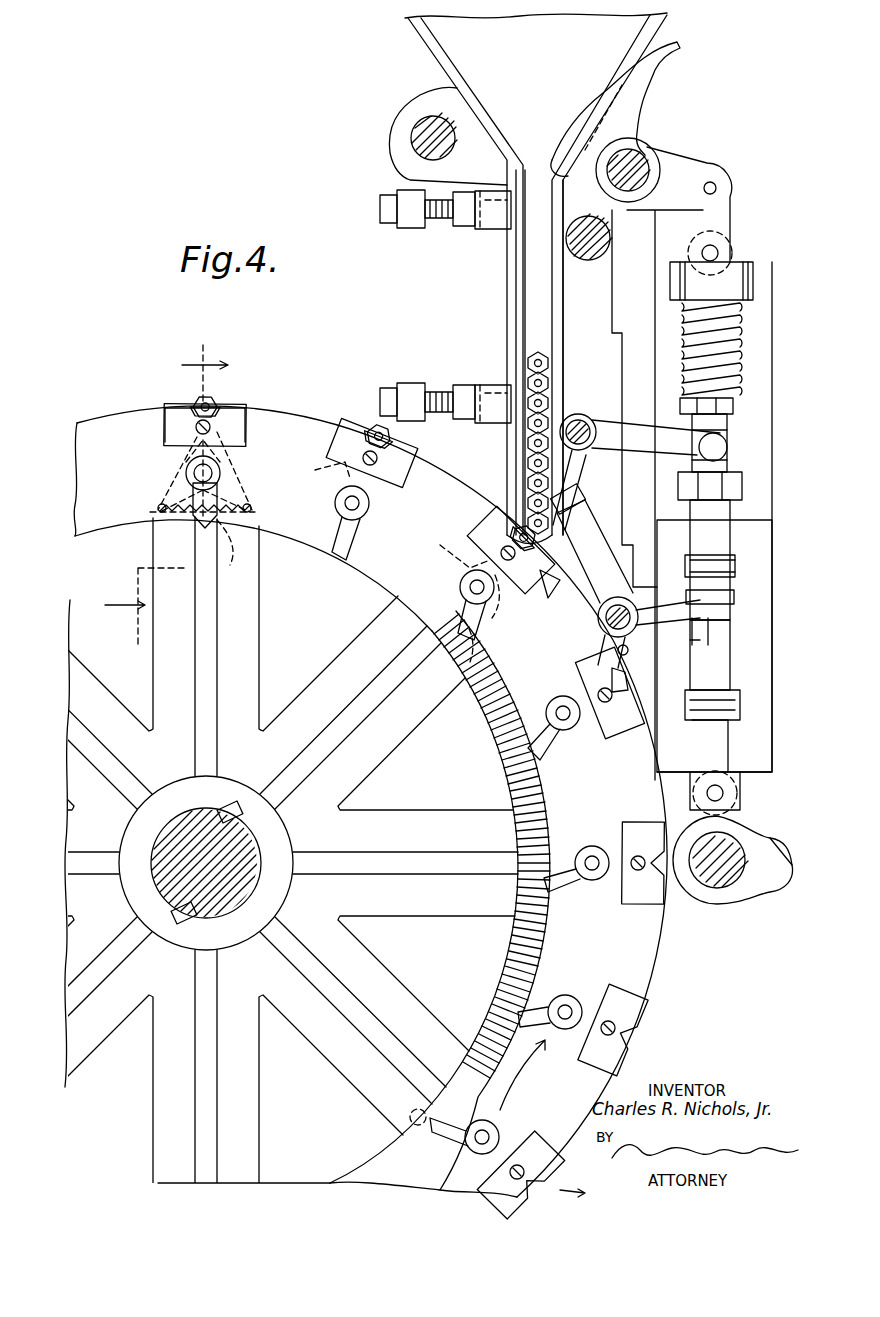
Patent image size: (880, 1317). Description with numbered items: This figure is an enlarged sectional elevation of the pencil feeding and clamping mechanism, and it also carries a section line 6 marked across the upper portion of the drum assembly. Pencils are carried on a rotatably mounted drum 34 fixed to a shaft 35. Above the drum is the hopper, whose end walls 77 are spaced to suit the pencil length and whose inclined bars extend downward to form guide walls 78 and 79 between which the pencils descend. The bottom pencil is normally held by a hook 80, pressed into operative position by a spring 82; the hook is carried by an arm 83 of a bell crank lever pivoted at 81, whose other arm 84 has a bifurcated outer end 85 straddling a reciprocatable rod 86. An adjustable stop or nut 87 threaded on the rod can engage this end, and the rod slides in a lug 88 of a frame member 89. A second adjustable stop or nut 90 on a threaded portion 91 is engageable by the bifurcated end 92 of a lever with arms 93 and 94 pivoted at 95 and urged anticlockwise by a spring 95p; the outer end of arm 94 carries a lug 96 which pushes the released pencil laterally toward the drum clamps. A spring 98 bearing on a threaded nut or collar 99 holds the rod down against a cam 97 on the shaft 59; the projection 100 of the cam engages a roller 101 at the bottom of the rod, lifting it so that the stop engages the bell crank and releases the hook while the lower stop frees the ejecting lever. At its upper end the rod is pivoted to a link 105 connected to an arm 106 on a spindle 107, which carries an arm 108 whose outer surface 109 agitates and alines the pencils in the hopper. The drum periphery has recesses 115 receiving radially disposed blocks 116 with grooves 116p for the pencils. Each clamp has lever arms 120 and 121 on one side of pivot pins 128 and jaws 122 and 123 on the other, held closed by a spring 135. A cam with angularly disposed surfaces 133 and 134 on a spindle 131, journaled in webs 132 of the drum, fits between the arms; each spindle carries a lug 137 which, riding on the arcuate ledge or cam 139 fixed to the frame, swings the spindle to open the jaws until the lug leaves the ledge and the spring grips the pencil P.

The drum 34 is at (68, 436).
The shaft 35 is at (245, 858).
The shaft 59 is at (726, 880).
The end walls 77 is at (460, 30).
The guide wall 78 is at (522, 262).
The guide wall 79 is at (546, 290).
The hook 80 is at (550, 592).
The pivot 81 is at (590, 427).
The spring 82 is at (576, 420).
The arm 83 is at (566, 478).
The arm 84 is at (656, 437).
The bifurcated outer end 85 is at (692, 452).
The reciprocatable rod 86 is at (727, 440).
The adjustable stop or nut 87 is at (730, 470).
The lug 88 is at (748, 270).
The frame member 89 is at (770, 628).
The adjustable stop or nut 90 is at (735, 592).
The threaded portion 91 is at (735, 564).
The bifurcated end 92 is at (694, 646).
The arm 93 is at (652, 606).
The arm 94 is at (602, 550).
The pivot 95 is at (600, 620).
The spring 95p is at (617, 650).
The lug 96 is at (580, 504).
The cam 97 is at (698, 906).
The spring 98 is at (742, 330).
The threaded nut or collar 99 is at (735, 405).
The projection 100 is at (778, 882).
The roller 101 is at (740, 806).
The link 105 is at (726, 232).
The arm 106 is at (705, 178).
The spindle 107 is at (642, 166).
The arm 108 is at (656, 92).
The outer surface 109 is at (613, 97).
The recesses 115 is at (160, 423).
The blocks 116 is at (226, 414).
The grooves 116p is at (345, 465).
The arm 120 is at (160, 510).
The arm 121 is at (250, 496).
The jaw 122 is at (195, 403).
The jaw 123 is at (240, 372).
The pivot pins 128 is at (196, 430).
The spindle 131 is at (518, 862).
The webs 132 is at (78, 483).
The angularly disposed surface 133 is at (186, 473).
The angularly disposed surface 134 is at (226, 470).
The spring 135 is at (220, 545).
The lug 137 is at (215, 575).
The arcuate ledge or cam 139 is at (550, 840).
The section line 6 is at (166, 489).
The pencil P is at (550, 380).